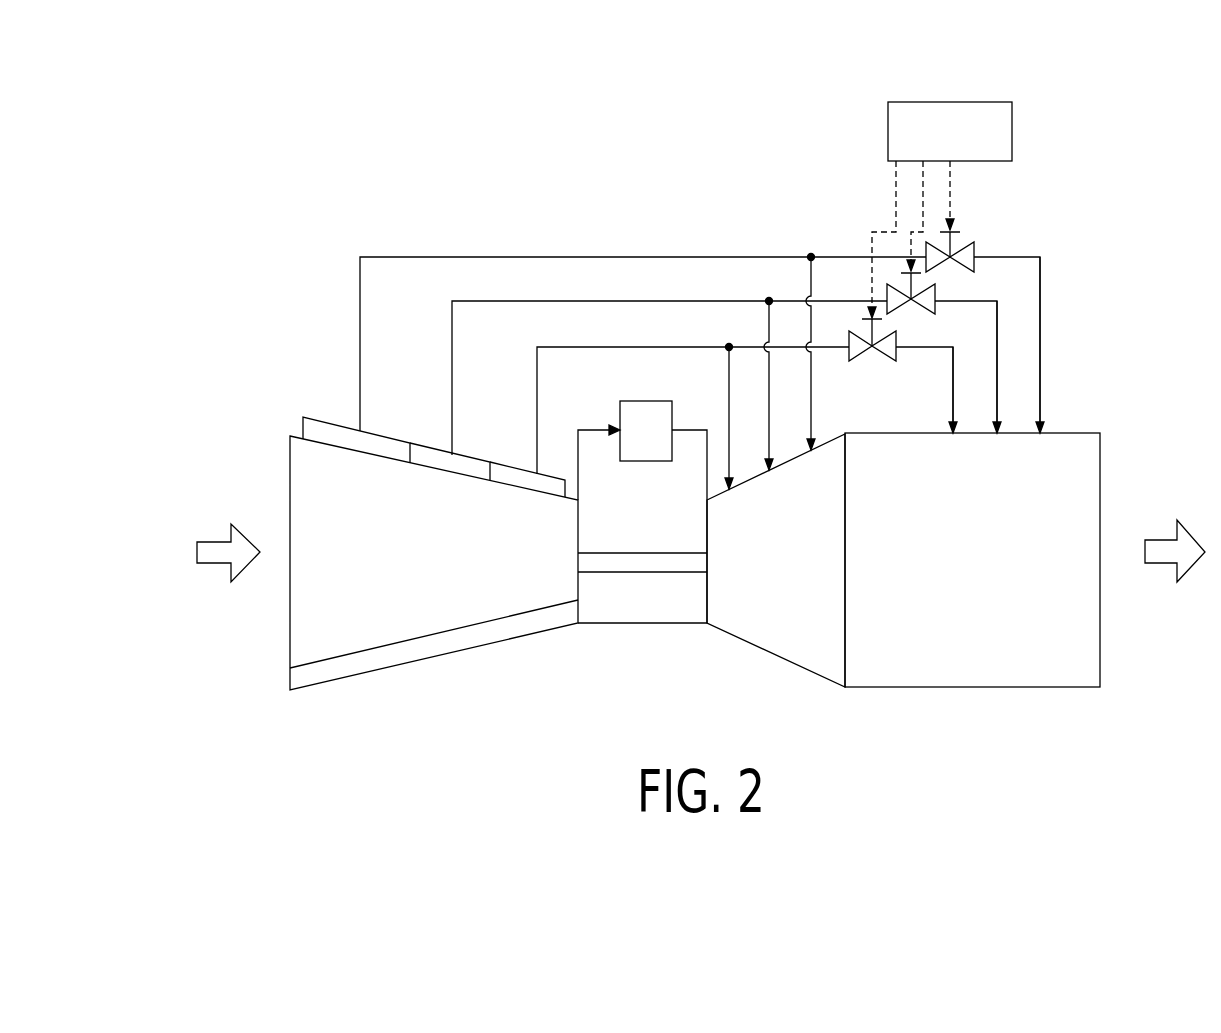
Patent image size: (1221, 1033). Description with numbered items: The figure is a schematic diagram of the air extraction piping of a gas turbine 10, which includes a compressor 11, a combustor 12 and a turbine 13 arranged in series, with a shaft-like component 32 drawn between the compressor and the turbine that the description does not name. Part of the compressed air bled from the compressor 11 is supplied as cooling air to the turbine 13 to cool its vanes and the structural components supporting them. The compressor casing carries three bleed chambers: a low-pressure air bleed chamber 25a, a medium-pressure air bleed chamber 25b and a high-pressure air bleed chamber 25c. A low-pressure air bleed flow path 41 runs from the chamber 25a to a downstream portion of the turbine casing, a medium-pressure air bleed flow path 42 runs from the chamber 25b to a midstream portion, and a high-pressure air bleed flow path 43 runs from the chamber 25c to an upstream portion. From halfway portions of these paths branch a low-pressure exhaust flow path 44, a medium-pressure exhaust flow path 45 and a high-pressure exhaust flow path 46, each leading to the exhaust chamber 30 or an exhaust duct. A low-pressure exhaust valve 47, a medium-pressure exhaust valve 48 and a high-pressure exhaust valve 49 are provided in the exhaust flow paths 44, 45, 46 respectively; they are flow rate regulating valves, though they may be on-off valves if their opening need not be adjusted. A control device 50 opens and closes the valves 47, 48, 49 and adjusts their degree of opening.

The gas turbine 10 is at (1104, 230).
The compressor 11 is at (284, 445).
The combustor 12 is at (646, 392).
The turbine 13 is at (828, 432).
The low-pressure air bleed chamber 25a is at (340, 426).
The medium-pressure air bleed chamber 25b is at (437, 451).
The high-pressure air bleed chamber 25c is at (516, 469).
The exhaust chamber 30 is at (1063, 688).
The rotor 32 is at (643, 562).
The low-pressure air bleed flow path 41 is at (378, 257).
The medium-pressure air bleed flow path 42 is at (640, 301).
The high-pressure air bleed flow path 43 is at (693, 347).
The low-pressure exhaust flow path 44 is at (1040, 303).
The medium-pressure exhaust flow path 45 is at (997, 323).
The high-pressure exhaust flow path 46 is at (953, 357).
The low-pressure exhaust valve 47 is at (974, 242).
The medium-pressure exhaust valve 48 is at (936, 290).
The high-pressure exhaust valve 49 is at (897, 356).
The control device 50 is at (949, 102).